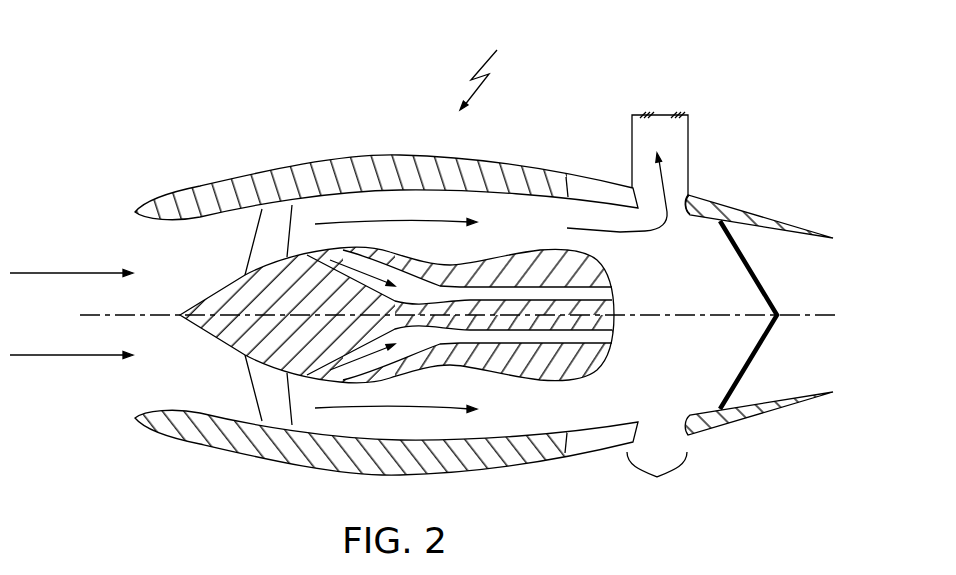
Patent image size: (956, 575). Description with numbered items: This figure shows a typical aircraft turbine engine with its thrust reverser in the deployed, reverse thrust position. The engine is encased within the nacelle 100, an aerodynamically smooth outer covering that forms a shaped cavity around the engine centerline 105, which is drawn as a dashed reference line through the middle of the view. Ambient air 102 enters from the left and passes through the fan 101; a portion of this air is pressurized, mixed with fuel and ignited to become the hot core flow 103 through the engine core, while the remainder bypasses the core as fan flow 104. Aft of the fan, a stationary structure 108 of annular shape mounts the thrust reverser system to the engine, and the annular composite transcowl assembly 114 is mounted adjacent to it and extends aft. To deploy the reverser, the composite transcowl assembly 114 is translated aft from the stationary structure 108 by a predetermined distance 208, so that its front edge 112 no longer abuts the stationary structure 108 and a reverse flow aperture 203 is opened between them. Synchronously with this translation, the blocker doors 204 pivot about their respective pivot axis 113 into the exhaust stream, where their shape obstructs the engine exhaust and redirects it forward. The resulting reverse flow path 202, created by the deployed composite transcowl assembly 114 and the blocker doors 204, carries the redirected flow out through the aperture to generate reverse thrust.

The nacelle 100 is at (495, 67).
The fan 101 is at (274, 207).
The ambient air 102 is at (82, 357).
The core flow 103 is at (402, 364).
The fan flow 104 is at (408, 410).
The engine centerline 105 is at (778, 316).
The stationary structure 108 is at (599, 189).
The front edge 112 is at (690, 198).
The pivot axis 113 is at (660, 341).
The composite transcowl assembly 114 is at (770, 213).
The reverse flow path 202 is at (652, 231).
The reverse flow aperture 203 is at (657, 481).
The blocker door 204 is at (752, 362).
The predetermined distance 208 is at (660, 115).